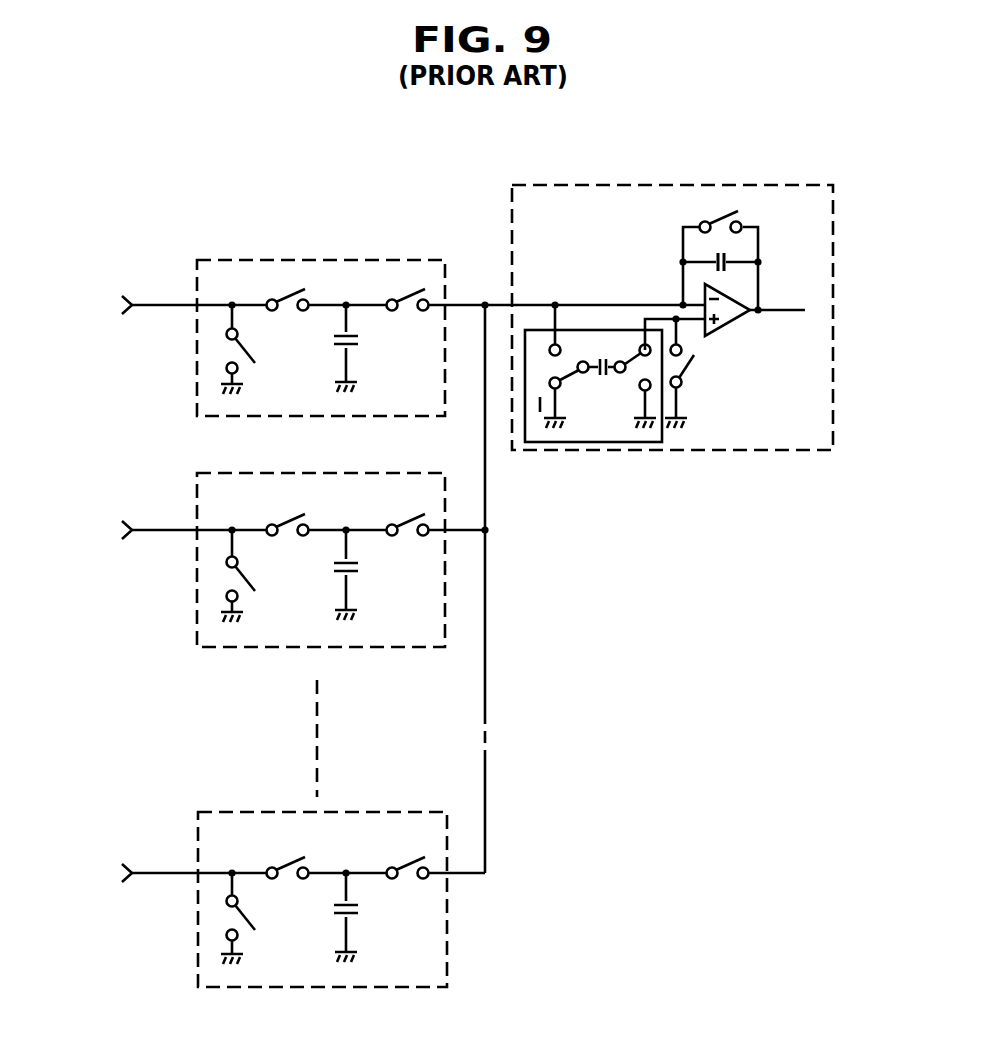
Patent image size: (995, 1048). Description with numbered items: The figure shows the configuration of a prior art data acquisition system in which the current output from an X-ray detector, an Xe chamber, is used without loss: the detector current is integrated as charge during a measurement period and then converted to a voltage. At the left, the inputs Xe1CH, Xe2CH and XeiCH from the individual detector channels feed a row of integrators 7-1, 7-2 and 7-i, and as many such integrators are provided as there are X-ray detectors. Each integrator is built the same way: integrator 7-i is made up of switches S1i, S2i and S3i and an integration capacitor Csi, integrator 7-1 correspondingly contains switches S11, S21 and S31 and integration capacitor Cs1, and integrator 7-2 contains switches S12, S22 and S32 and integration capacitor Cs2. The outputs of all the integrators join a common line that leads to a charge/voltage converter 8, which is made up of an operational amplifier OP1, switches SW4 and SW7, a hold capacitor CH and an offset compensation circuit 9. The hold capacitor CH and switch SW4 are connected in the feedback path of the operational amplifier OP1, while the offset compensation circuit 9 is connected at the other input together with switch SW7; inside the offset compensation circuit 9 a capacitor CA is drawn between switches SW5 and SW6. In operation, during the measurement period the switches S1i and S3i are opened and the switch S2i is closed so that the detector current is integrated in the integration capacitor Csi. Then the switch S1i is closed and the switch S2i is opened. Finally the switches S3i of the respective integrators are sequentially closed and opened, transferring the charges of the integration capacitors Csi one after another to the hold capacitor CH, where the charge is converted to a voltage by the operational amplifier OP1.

The integrator 7-1 is at (347, 258).
The integrator 7-2 is at (323, 473).
The integrator 7-i is at (353, 812).
The charge/voltage converter 8 is at (765, 184).
The offset compensation circuit 9 is at (588, 444).
The operational amplifier OP1 is at (722, 302).
The hold capacitor CH is at (712, 249).
The switched capacitor CA is at (630, 344).
The switch SW4 is at (722, 210).
The switch SW5 is at (571, 386).
The switch SW6 is at (619, 386).
The switch SW7 is at (708, 387).
The switch S11 is at (262, 349).
The switch S21 is at (283, 289).
The switch S31 is at (393, 289).
The integration capacitor Cs1 is at (372, 348).
The switch S12 is at (263, 576).
The switch S22 is at (283, 514).
The switch S32 is at (392, 514).
The integration capacitor Cs2 is at (373, 575).
The switch S1i is at (265, 918).
The switch S2i is at (275, 856).
The switch S3i is at (391, 856).
The integration capacitor Csi is at (373, 917).
The channel 1 input signal Xe1CH is at (107, 289).
The channel 2 input signal Xe2CH is at (107, 515).
The channel i input signal XeiCH is at (107, 857).